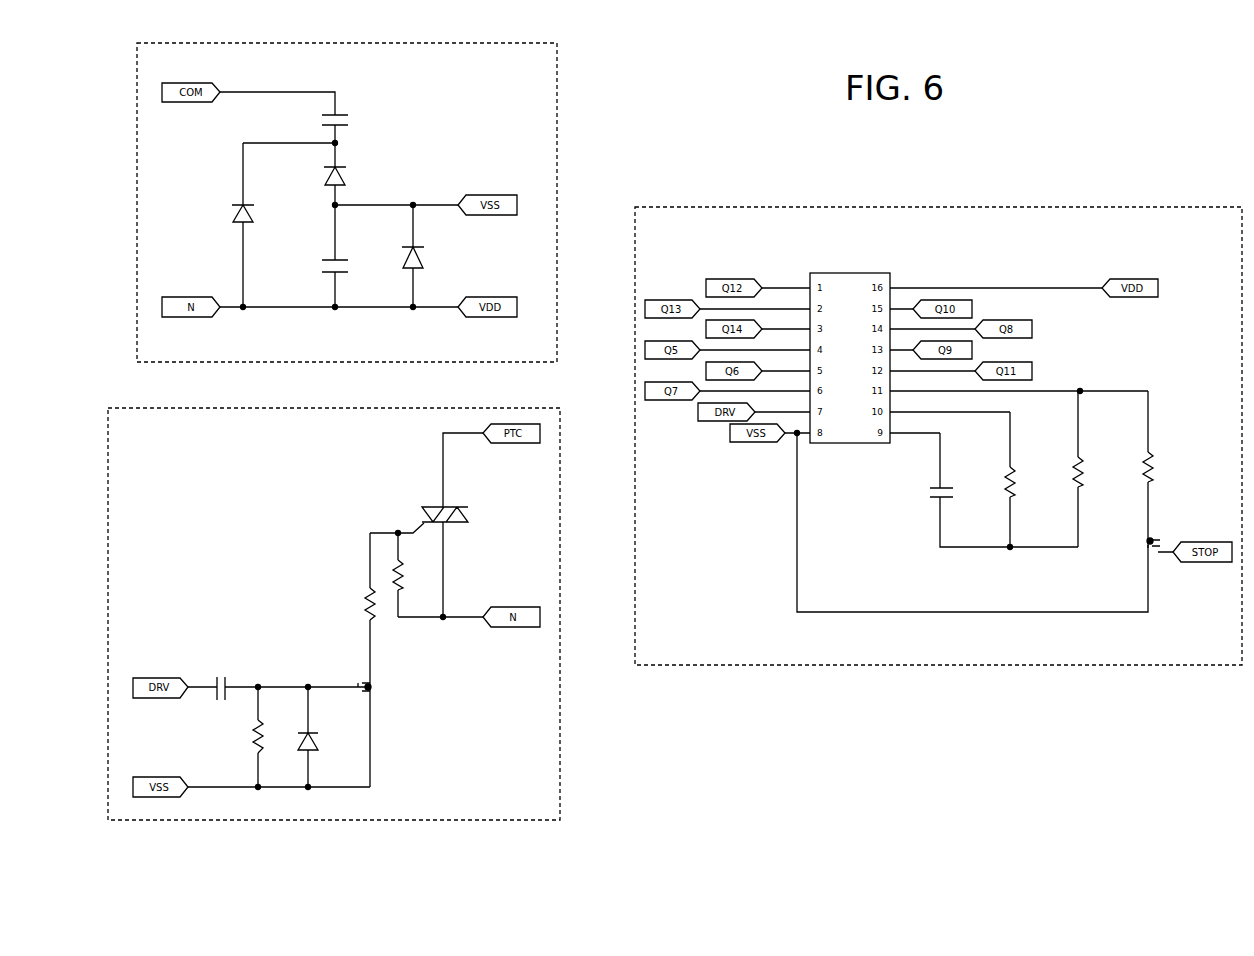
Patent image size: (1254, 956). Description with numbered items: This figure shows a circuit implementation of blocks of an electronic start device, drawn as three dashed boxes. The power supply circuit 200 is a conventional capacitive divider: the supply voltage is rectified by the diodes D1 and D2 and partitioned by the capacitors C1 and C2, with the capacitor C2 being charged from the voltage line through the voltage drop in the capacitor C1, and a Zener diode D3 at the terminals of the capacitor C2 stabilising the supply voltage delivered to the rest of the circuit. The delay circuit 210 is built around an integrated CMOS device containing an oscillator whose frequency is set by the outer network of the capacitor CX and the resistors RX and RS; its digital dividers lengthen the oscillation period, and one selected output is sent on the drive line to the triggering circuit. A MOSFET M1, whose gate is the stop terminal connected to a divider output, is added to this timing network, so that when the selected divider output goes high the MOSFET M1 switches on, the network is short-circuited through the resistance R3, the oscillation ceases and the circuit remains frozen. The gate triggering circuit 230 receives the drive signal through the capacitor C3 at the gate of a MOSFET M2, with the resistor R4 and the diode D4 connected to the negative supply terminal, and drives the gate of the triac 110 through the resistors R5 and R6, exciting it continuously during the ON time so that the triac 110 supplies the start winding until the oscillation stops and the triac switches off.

The power supply circuit 200 is at (573, 122).
The delay circuit 210 is at (1137, 192).
The gate triggering circuit 230 is at (585, 748).
The triac 110 is at (470, 512).
The capacitor C1 is at (347, 118).
The capacitor C2 is at (325, 262).
The capacitor C3 is at (216, 680).
The capacitor CX is at (935, 496).
The diode D1 is at (348, 182).
The diode D2 is at (230, 214).
The Zener diode D3 is at (425, 258).
The diode D4 is at (318, 742).
The resistance R3 is at (1142, 460).
The resistor R4 is at (250, 742).
The resistor R5 is at (362, 598).
The resistor R6 is at (398, 560).
The resistor RX is at (1005, 470).
The resistor RS is at (1072, 466).
The MOSFET M1 is at (1160, 536).
The MOSFET M2 is at (362, 682).